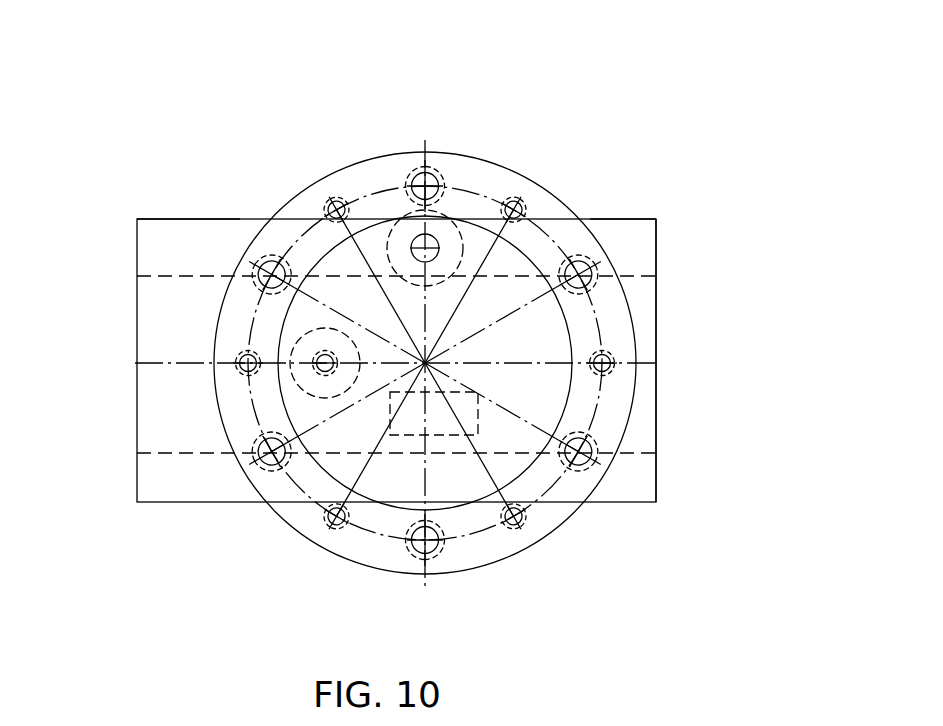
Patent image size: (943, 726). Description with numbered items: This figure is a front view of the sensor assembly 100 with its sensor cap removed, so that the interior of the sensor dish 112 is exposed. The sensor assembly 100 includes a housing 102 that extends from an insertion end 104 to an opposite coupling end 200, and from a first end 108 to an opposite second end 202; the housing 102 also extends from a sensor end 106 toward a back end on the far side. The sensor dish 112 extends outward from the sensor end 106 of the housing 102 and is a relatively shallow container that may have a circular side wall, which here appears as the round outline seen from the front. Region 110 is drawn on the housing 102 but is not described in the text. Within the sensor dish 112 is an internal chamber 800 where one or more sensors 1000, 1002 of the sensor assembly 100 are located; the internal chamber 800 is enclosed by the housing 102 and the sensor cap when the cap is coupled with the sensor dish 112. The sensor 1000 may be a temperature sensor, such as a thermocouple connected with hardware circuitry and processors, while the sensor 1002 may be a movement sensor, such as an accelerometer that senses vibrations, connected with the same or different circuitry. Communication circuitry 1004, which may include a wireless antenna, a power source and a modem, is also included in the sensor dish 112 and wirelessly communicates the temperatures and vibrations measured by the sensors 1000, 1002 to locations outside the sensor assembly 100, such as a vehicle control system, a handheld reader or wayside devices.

The sensor assembly 100 is at (653, 598).
The housing 102 is at (660, 218).
The insertion end 104 is at (676, 473).
The sensor end 106 is at (210, 235).
The first end 108 is at (598, 519).
The housing section 110 is at (198, 325).
The sensor dish 112 is at (637, 112).
The coupling end 200 is at (118, 468).
The second end 202 is at (610, 200).
The internal chamber 800 is at (471, 485).
The sensor 1000 is at (457, 238).
The sensor 1002 is at (313, 392).
The communication circuitry 1004 is at (390, 410).